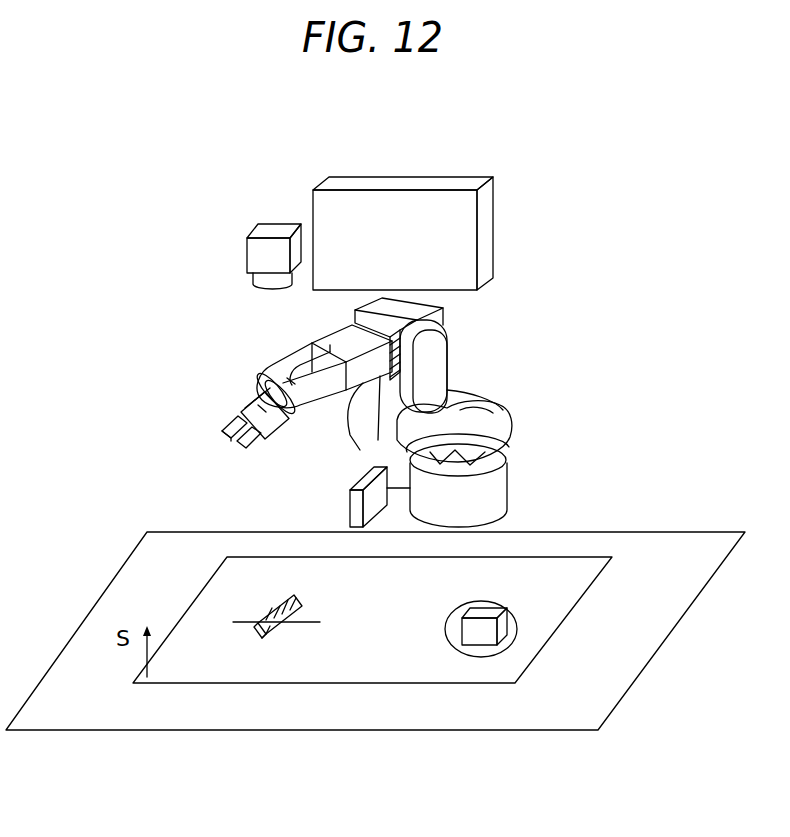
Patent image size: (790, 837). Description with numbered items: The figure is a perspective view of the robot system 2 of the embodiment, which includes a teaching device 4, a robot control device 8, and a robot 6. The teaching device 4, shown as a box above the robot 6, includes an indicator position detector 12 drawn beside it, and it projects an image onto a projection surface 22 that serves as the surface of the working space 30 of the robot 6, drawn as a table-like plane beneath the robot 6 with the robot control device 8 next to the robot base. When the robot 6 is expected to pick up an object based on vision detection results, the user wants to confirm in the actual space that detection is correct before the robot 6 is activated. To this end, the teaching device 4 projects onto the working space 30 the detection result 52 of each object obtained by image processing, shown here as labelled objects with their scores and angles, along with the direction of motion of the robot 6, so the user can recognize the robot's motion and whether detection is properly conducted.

The robot system 2 is at (568, 226).
The teaching device 4 is at (400, 174).
The robot 6 is at (488, 343).
The robot control device 8 is at (357, 488).
The indicator position detector 12 is at (263, 257).
The projection surface 22 is at (187, 608).
The working space 30 is at (328, 670).
The detection result 52 is at (205, 656).